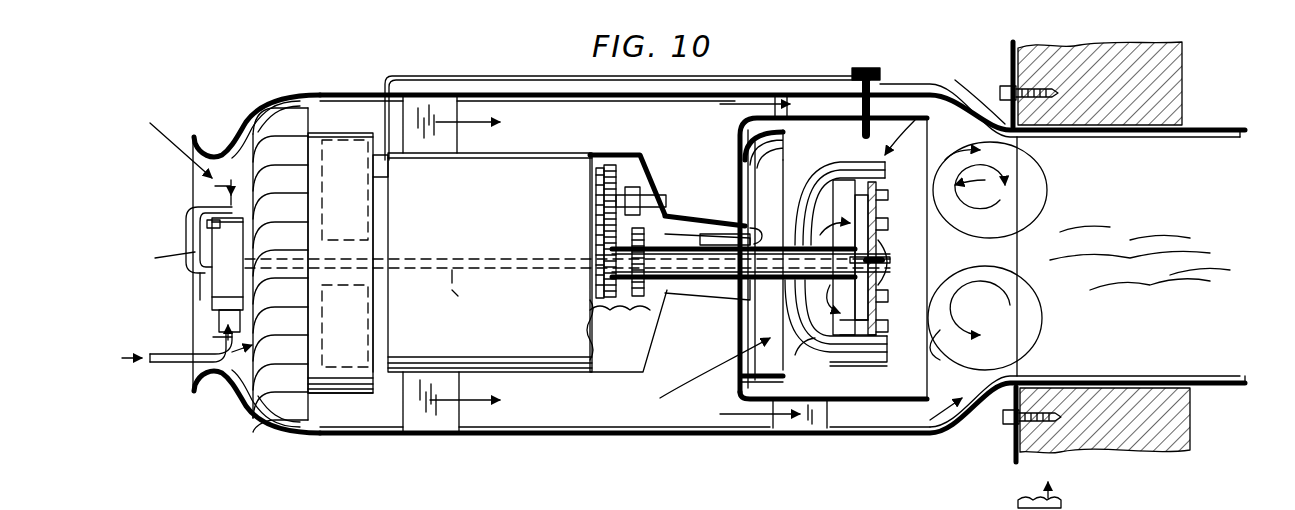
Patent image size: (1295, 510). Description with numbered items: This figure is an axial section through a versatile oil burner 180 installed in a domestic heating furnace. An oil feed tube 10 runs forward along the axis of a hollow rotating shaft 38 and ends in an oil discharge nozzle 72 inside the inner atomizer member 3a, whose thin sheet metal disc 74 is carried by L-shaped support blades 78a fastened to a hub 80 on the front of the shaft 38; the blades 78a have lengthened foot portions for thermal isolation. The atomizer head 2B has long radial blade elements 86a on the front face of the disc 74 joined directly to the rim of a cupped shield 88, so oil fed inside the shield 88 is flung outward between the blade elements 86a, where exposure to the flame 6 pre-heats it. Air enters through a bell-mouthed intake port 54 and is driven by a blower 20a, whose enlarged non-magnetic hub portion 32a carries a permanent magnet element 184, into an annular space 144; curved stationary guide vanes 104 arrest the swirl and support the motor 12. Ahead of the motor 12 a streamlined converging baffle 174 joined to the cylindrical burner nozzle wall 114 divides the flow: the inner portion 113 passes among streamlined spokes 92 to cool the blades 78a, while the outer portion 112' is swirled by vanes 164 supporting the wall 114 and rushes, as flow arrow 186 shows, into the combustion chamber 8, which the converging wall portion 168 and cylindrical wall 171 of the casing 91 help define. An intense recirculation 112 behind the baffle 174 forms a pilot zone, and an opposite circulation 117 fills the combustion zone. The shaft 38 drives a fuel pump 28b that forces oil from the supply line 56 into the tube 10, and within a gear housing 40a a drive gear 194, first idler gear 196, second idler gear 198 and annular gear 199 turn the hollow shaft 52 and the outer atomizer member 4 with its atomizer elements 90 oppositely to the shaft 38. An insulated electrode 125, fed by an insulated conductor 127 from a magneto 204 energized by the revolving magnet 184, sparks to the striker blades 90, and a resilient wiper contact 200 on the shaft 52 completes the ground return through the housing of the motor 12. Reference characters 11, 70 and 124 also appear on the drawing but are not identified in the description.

The atomizer head 2B is at (910, 178).
The inner atomizer member 3a is at (925, 343).
The outer atomizer member 4 is at (880, 148).
The flame 6 is at (1102, 221).
The combustion chamber 8 is at (1090, 343).
The oil feed tube 10 is at (1098, 503).
The section indicator 11 is at (219, 263).
The motor 12 is at (477, 248).
The blower 20a is at (262, 428).
The fuel pump 28b is at (200, 298).
The enlarged hub portion 32a is at (336, 396).
The hollow rotating shaft 38 is at (770, 286).
The gear housing 40a is at (636, 145).
The hollow shaft 52 is at (696, 242).
The bell-mouthed intake port 54 is at (790, 236).
The supply line 56 is at (185, 368).
The bracket 70 is at (192, 207).
The oil discharge nozzle 72 is at (880, 266).
The thin sheet metal disc 74 is at (874, 320).
The L-shaped support blades 78a is at (820, 358).
The hub 80 is at (812, 288).
The radial blade elements 86a is at (876, 210).
The cupped shield 88 is at (887, 252).
The atomizer elements 90 is at (882, 365).
The casing 91 is at (616, 438).
The streamlined spokes 92 is at (820, 168).
The curved stationary guide vanes 104 is at (440, 420).
The intense recirculation 112 is at (780, 256).
The outer portion of the air flow 112' is at (744, 401).
The inner portion of the air flow 113 is at (722, 368).
The cylindrical burner nozzle wall 114 is at (888, 426).
The intense circulation 117 is at (999, 213).
The flange 124 is at (1098, 80).
The insulated electrode 125 is at (878, 92).
The insulated conductor 127 is at (538, 74).
The annular space 144 is at (322, 131).
The swirling vanes 164 is at (826, 420).
The converging wall portion 168 is at (976, 102).
The forwardly extending cylindrical wall 171 is at (1248, 380).
The streamlined converging baffle 174 is at (770, 185).
The versatile oil burner 180 is at (372, 452).
The permanent magnet element 184 is at (388, 178).
The air flow 186 is at (958, 412).
The drive gear 194 is at (604, 285).
The first idler gear 196 is at (596, 178).
The second idler gear 198 is at (633, 186).
The annular gear 199 is at (636, 298).
The resilient wiper contact 200 is at (718, 230).
The magneto 204 is at (388, 214).